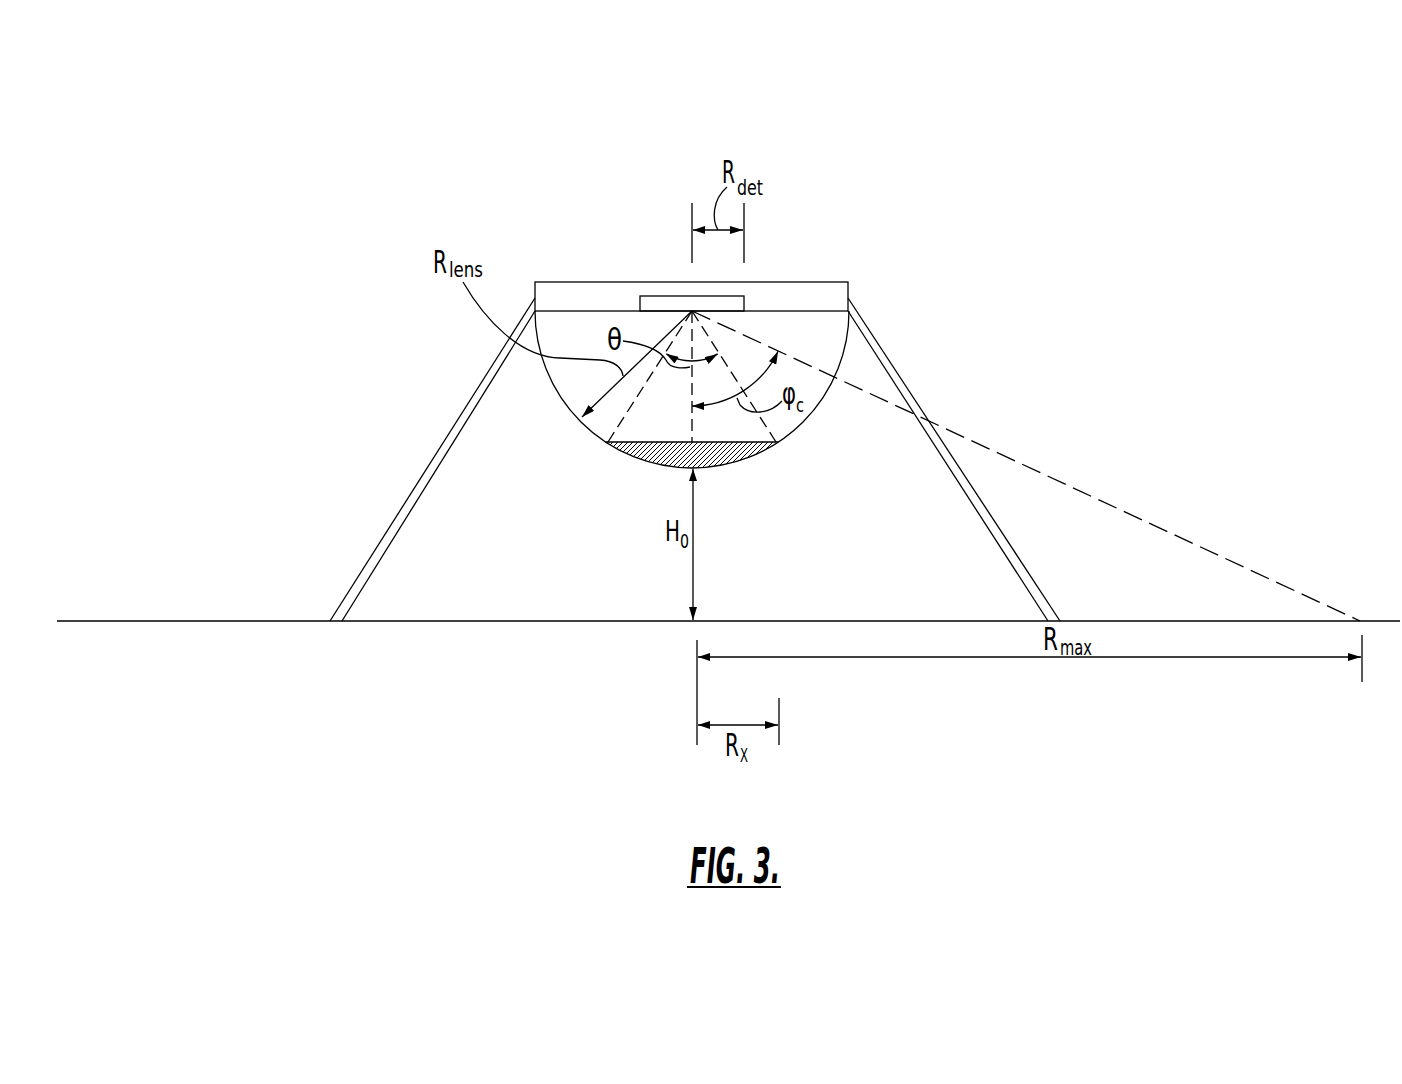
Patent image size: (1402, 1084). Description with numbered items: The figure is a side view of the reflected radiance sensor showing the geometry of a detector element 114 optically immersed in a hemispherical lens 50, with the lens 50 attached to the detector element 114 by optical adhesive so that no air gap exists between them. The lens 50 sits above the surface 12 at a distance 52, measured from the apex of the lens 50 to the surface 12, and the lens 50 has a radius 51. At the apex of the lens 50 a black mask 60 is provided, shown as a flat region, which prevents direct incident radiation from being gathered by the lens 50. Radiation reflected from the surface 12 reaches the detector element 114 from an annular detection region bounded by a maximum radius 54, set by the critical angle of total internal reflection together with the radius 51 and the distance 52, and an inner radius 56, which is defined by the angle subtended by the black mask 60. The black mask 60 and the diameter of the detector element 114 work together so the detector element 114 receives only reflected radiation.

The surface 12 is at (178, 621).
The lens 50 is at (810, 417).
The radius of the lens 51 is at (617, 383).
The distance between the apex of the lens and the surface 52 is at (693, 555).
The maximum radius 54 is at (1145, 657).
The inner radius 56 is at (727, 725).
The black mask 60 is at (717, 442).
The detector element 114 is at (662, 296).